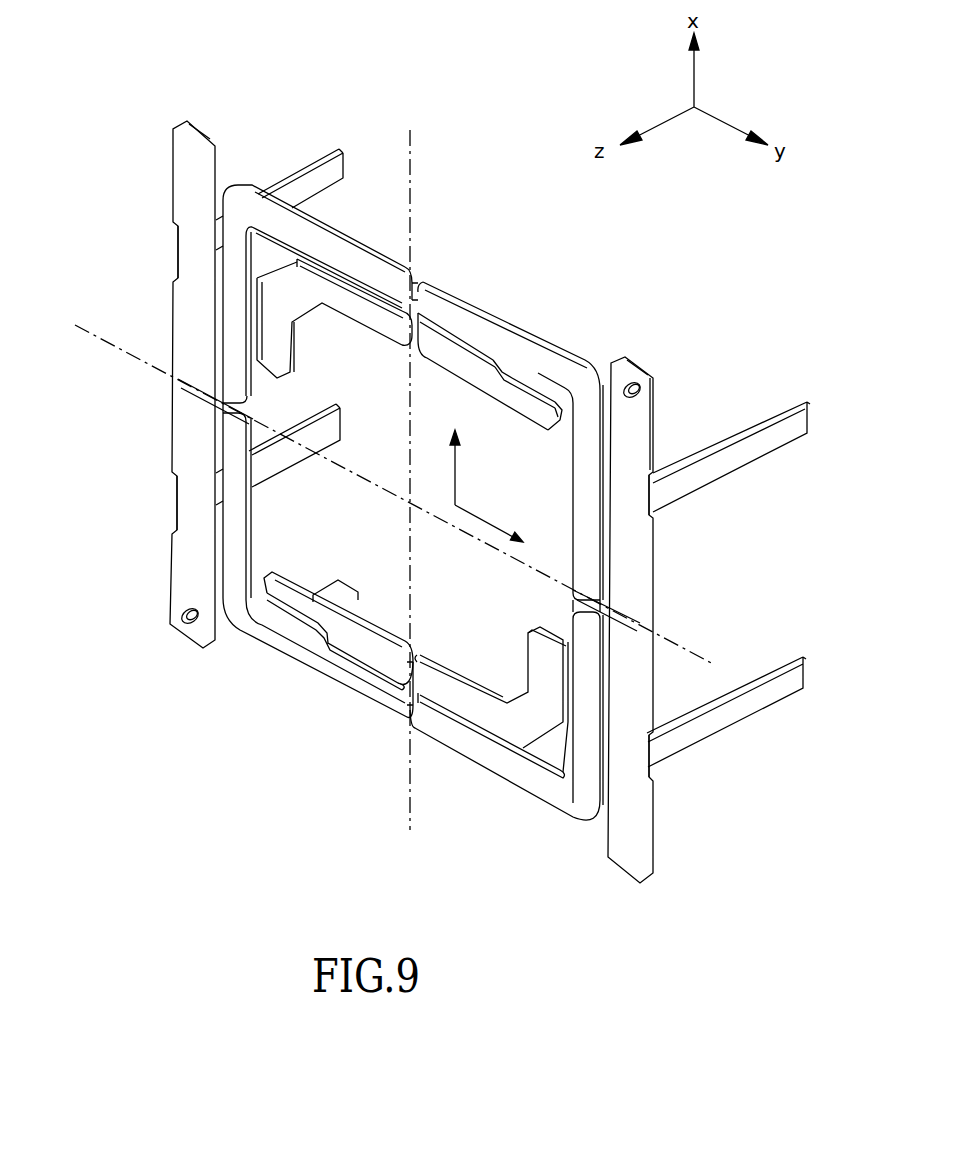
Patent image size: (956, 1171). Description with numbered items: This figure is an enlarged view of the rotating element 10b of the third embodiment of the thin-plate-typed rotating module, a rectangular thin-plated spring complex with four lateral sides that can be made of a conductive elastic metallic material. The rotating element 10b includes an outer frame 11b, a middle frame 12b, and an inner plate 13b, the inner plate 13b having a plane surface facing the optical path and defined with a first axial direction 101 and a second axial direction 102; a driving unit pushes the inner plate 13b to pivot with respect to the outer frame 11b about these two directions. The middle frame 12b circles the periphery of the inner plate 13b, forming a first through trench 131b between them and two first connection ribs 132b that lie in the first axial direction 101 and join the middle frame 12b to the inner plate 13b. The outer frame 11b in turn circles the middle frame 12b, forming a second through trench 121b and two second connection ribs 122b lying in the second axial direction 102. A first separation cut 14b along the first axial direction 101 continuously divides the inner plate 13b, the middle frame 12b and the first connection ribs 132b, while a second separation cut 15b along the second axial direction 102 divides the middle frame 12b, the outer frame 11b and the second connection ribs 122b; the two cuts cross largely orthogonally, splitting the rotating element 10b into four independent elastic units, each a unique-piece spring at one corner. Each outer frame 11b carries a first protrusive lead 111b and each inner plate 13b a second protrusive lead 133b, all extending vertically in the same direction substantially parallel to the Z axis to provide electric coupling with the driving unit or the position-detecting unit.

The rotating element 10b is at (130, 126).
The outer frame 11b is at (183, 178).
The first protrusive lead 111b is at (303, 172).
The middle frame 12b is at (233, 243).
The second through trench 121b is at (220, 282).
The second connection rib 122b is at (200, 383).
The inner plate 13b is at (327, 303).
The first through trench 131b is at (345, 278).
The first connection rib 132b is at (383, 292).
The second protrusive lead 133b is at (515, 372).
The first separation cut 14b is at (425, 283).
The second separation cut 15b is at (205, 403).
The first axial direction 101 is at (455, 475).
The second axial direction 102 is at (472, 512).